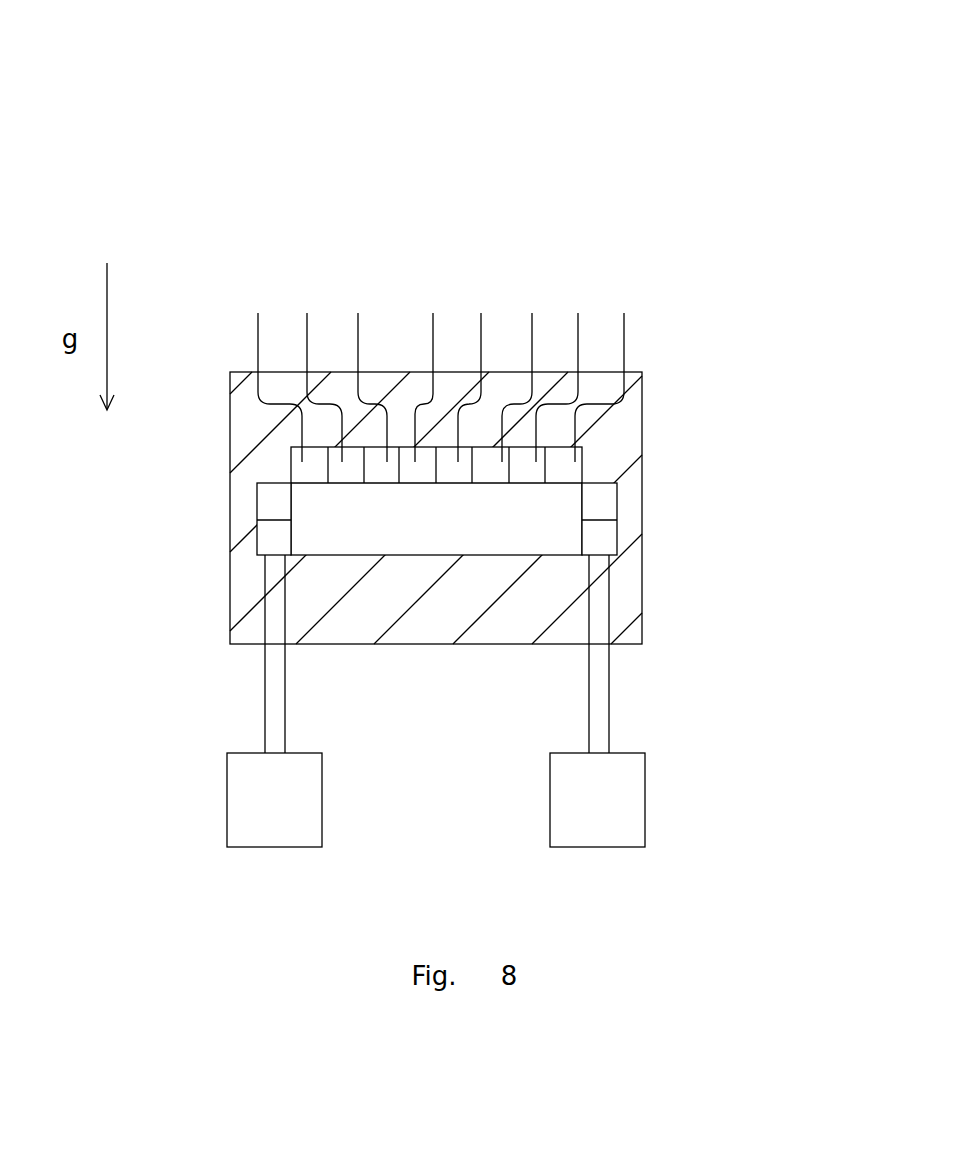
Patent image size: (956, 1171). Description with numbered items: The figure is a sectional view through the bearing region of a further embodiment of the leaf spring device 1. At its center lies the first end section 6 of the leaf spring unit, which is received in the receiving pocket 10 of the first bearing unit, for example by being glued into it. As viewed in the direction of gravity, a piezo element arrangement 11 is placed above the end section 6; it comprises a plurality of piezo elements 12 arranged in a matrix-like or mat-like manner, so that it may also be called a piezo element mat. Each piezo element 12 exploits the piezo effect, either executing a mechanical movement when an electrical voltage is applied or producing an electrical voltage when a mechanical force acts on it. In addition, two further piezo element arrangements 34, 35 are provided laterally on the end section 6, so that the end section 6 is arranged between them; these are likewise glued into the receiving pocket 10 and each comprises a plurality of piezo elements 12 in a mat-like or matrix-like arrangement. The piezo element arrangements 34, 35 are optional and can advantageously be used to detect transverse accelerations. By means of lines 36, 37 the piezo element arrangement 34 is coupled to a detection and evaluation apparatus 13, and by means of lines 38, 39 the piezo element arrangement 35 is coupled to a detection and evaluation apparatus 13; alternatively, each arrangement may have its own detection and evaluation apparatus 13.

The leaf spring device 1 is at (411, 89).
The first end section 6 is at (391, 518).
The receiving pocket 10 is at (527, 557).
The piezo element arrangement 11 is at (237, 278).
The piezo element 12 is at (747, 520).
The detection and evaluation apparatus 13 is at (254, 817).
The piezo element arrangement 34 is at (86, 460).
The piezo element arrangement 35 is at (787, 460).
The line 36 is at (285, 680).
The line 37 is at (265, 720).
The line 38 is at (589, 680).
The line 39 is at (609, 720).